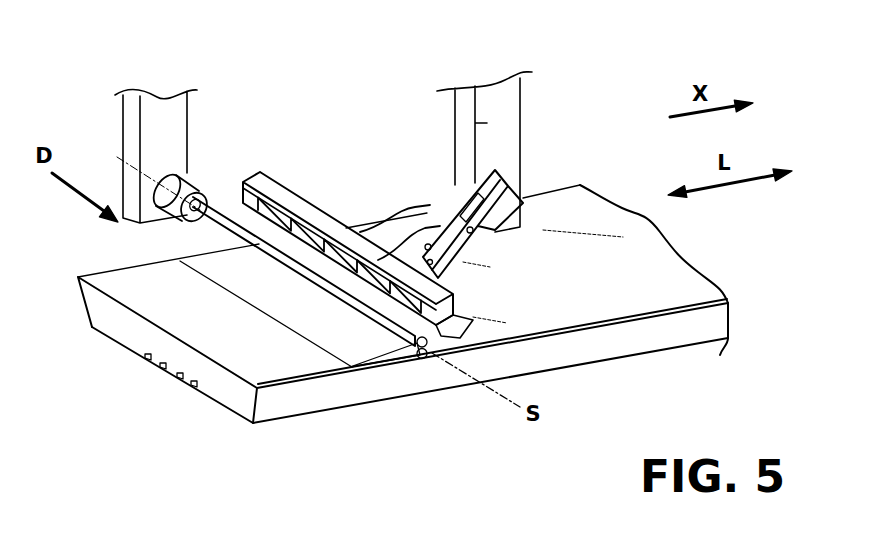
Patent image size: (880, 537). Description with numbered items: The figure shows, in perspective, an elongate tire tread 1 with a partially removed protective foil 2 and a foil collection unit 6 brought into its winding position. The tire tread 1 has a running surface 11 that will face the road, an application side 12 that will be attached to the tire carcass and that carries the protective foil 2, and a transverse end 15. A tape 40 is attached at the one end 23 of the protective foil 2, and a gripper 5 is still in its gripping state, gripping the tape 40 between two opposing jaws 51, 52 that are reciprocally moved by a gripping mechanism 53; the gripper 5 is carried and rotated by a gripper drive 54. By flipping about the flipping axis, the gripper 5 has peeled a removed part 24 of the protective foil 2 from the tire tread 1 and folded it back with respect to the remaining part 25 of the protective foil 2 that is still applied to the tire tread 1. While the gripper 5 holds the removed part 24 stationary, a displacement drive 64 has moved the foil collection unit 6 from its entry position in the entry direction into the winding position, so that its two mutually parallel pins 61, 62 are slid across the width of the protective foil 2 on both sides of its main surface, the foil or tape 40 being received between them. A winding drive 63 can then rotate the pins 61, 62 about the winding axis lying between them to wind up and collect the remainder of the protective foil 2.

The tire tread 1 is at (277, 398).
The protective foil 2 is at (693, 277).
The gripper 5 is at (486, 163).
The foil collection unit 6 is at (241, 198).
The running surface 11 is at (222, 410).
The application side 12 is at (113, 287).
The end 15 is at (117, 328).
The one end 23 is at (337, 240).
The removed part 24 is at (388, 357).
The remaining part 25 is at (620, 325).
The tape 40 is at (432, 340).
The gripping jaw 51 is at (477, 330).
The gripping jaw 52 is at (290, 200).
The gripping mechanism 53 is at (533, 193).
The gripper drive 54 is at (457, 130).
The pin 61 is at (213, 210).
The pin 62 is at (213, 228).
The winding drive 63 is at (170, 181).
The displacement drive 64 is at (150, 100).